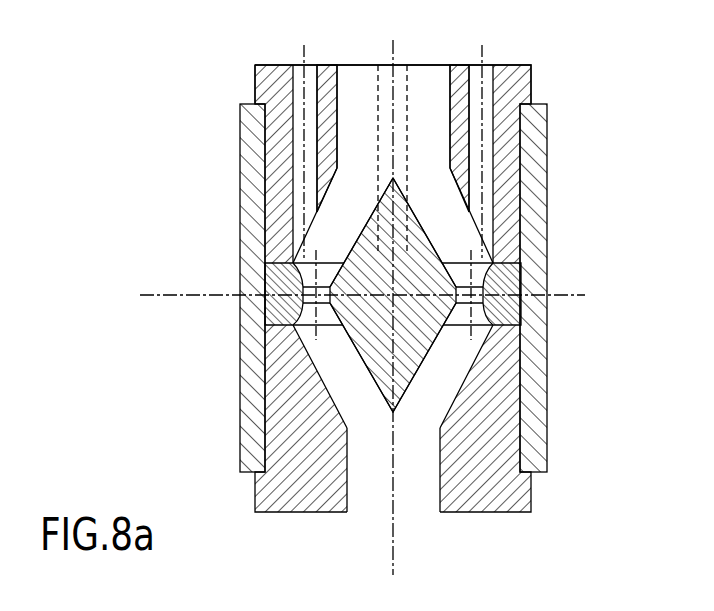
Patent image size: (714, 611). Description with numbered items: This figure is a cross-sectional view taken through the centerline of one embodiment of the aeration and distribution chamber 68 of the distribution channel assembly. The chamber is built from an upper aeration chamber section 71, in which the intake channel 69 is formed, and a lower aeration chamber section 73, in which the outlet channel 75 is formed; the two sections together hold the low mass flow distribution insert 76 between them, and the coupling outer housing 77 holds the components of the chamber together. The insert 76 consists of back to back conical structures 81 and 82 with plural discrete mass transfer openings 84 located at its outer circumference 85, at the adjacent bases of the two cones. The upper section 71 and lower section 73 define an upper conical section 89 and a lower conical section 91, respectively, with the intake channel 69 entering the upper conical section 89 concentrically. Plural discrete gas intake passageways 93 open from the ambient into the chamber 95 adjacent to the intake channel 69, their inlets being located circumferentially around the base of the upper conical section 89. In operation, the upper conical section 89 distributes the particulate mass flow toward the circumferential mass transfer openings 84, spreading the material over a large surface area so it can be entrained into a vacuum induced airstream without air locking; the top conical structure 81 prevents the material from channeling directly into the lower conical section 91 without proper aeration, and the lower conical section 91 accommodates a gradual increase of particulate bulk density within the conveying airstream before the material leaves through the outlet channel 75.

The aeration and distribution chamber 68 is at (237, 80).
The intake channel 69 is at (422, 82).
The upper aeration chamber section 71 is at (518, 83).
The lower aeration chamber section 73 is at (480, 497).
The outlet channel 75 is at (365, 497).
The low mass flow distribution insert 76 is at (430, 258).
The coupling outer housing 77 is at (540, 322).
The top conical structure 81 is at (345, 228).
The bottom conical structure 82 is at (358, 350).
The mass transfer openings 84 is at (308, 272).
The outer circumference 85 is at (283, 308).
The upper conical section 89 is at (453, 200).
The lower conical section 91 is at (326, 386).
The gas intake passageways 93 is at (312, 68).
The chamber 95 is at (345, 205).